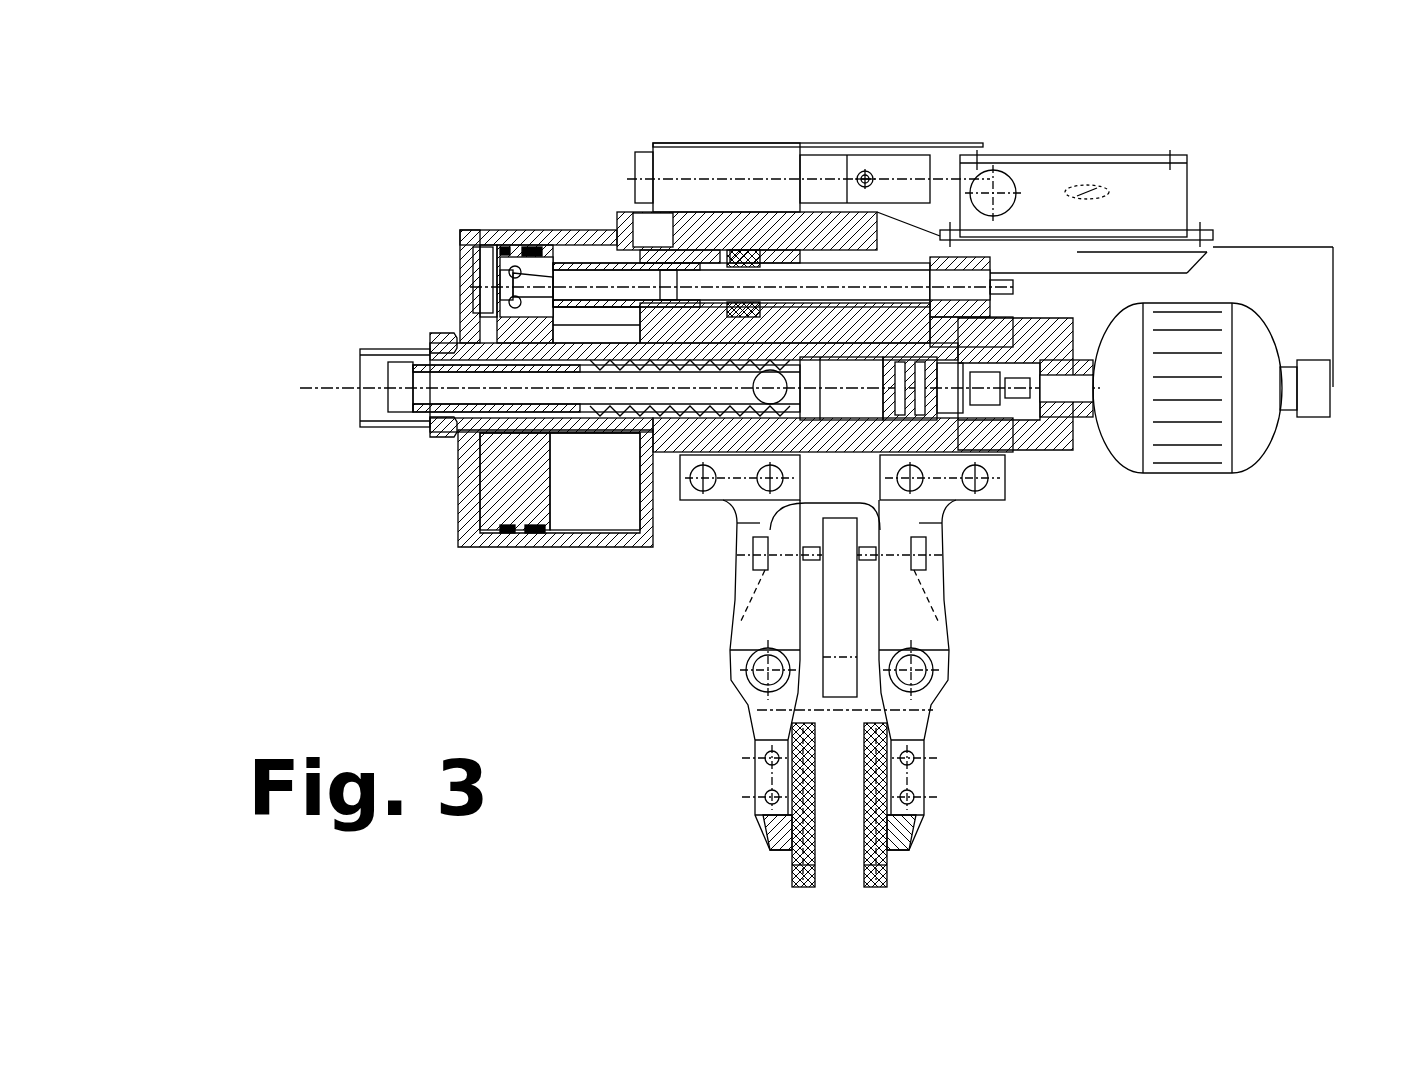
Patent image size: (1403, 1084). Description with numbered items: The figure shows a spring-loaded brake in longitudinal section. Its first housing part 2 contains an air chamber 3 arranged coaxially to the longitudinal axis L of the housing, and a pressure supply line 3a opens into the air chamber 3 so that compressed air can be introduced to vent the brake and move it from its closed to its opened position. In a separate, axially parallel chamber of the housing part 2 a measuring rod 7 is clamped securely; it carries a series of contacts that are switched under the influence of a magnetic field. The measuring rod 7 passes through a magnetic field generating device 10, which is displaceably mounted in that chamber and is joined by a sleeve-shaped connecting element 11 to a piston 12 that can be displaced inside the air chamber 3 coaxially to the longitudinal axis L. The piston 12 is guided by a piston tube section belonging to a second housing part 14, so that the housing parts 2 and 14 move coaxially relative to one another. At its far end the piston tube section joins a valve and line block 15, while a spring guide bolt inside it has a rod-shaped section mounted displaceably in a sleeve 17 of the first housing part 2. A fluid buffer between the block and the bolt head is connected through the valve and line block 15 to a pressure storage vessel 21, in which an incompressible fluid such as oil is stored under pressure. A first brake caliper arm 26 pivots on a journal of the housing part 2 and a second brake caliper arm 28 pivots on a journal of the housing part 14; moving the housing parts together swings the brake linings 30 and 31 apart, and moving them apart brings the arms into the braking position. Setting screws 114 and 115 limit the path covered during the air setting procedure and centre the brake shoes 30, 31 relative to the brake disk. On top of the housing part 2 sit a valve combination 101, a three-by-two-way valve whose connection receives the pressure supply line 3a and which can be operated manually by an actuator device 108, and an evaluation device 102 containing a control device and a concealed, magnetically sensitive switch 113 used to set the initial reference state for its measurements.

The first housing part 2 is at (483, 230).
The air chamber 3 is at (587, 507).
The pressure supply line 3a is at (637, 228).
The measuring rod 7 is at (812, 275).
The magnetic field generating device 10 is at (750, 247).
The sleeve-shaped connecting element 11 is at (547, 250).
The piston 12 is at (464, 542).
The second housing part 14 is at (905, 460).
The valve and line block 15 is at (1040, 440).
The sleeve 17 is at (428, 426).
The pressure storage vessel 21 is at (1260, 437).
The first brake caliper arm 26 is at (745, 513).
The second brake caliper arm 28 is at (925, 507).
The brake lining 30 is at (810, 773).
The brake lining 31 is at (870, 780).
The valve combination 101 is at (693, 160).
The evaluation device 102 is at (1150, 200).
The actuator device 108 is at (875, 176).
The switch 113 is at (1098, 188).
The setting screw 114 is at (740, 550).
The setting screw 115 is at (937, 563).
The longitudinal axis L is at (372, 393).